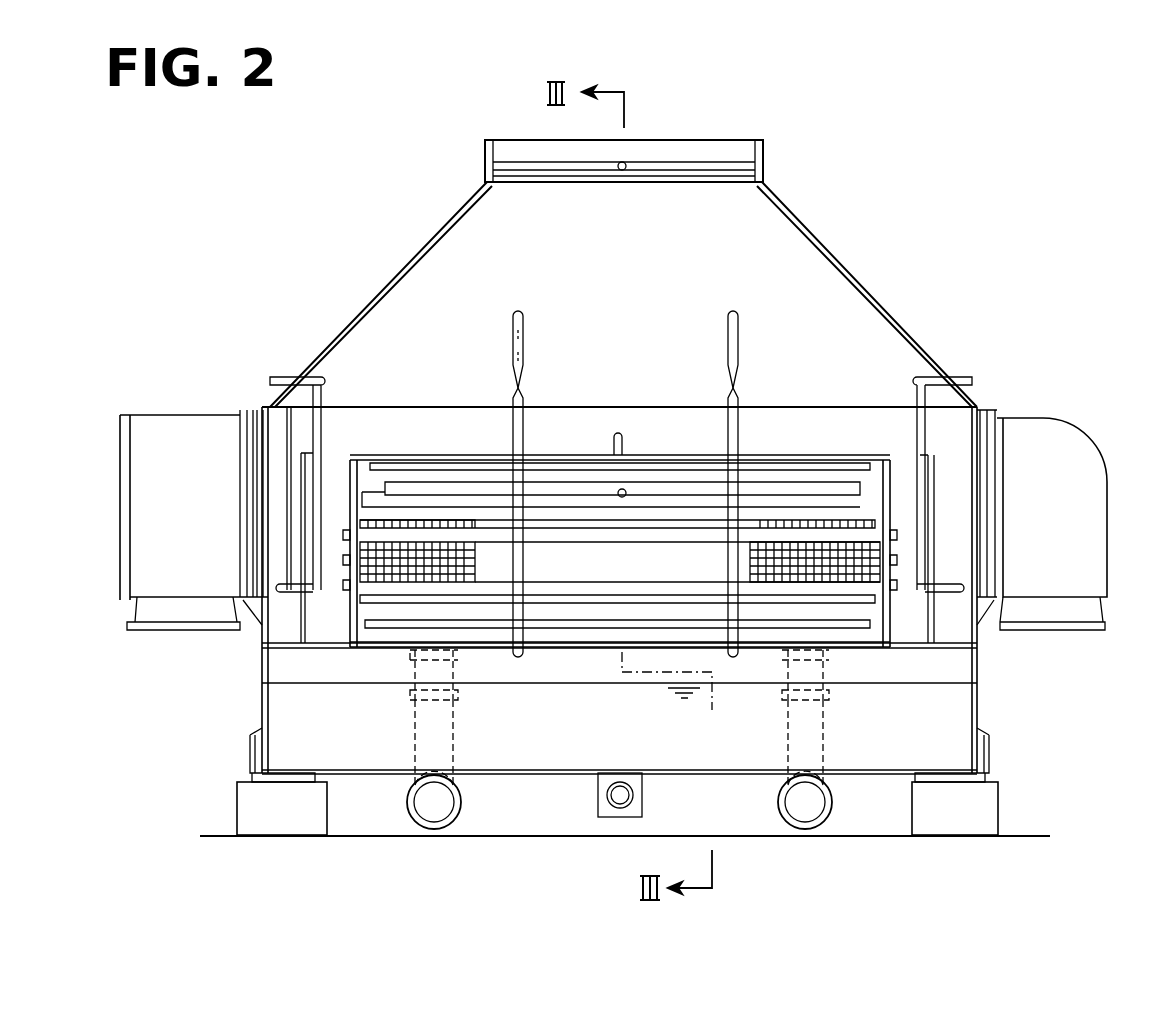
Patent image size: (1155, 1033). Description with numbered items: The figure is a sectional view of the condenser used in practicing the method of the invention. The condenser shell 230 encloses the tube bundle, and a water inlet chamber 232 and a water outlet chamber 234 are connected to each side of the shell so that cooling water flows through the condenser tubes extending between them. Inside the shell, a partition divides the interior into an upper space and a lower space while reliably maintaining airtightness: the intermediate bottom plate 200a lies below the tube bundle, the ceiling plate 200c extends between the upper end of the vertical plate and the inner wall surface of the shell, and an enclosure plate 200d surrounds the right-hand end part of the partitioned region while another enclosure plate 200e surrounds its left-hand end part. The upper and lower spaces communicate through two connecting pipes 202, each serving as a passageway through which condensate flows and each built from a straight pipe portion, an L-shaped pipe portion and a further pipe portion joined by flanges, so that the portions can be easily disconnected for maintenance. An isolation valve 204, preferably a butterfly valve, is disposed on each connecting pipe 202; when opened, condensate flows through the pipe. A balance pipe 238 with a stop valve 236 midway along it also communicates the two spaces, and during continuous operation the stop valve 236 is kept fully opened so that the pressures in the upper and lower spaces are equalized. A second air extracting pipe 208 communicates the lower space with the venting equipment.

The intermediate bottom plate 200a is at (837, 650).
The ceiling plate 200c is at (832, 455).
The enclosure plate 200d is at (977, 630).
The enclosure plate 200e is at (262, 630).
The connecting pipe 202 is at (452, 752).
The isolation valve 204 is at (462, 704).
The second air extracting pipe 208 is at (285, 380).
The condenser shell 230 is at (920, 332).
The water inlet chamber 232 is at (1090, 442).
The water outlet chamber 234 is at (182, 415).
The stop valve 236 is at (525, 390).
The balance pipe 238 is at (514, 366).